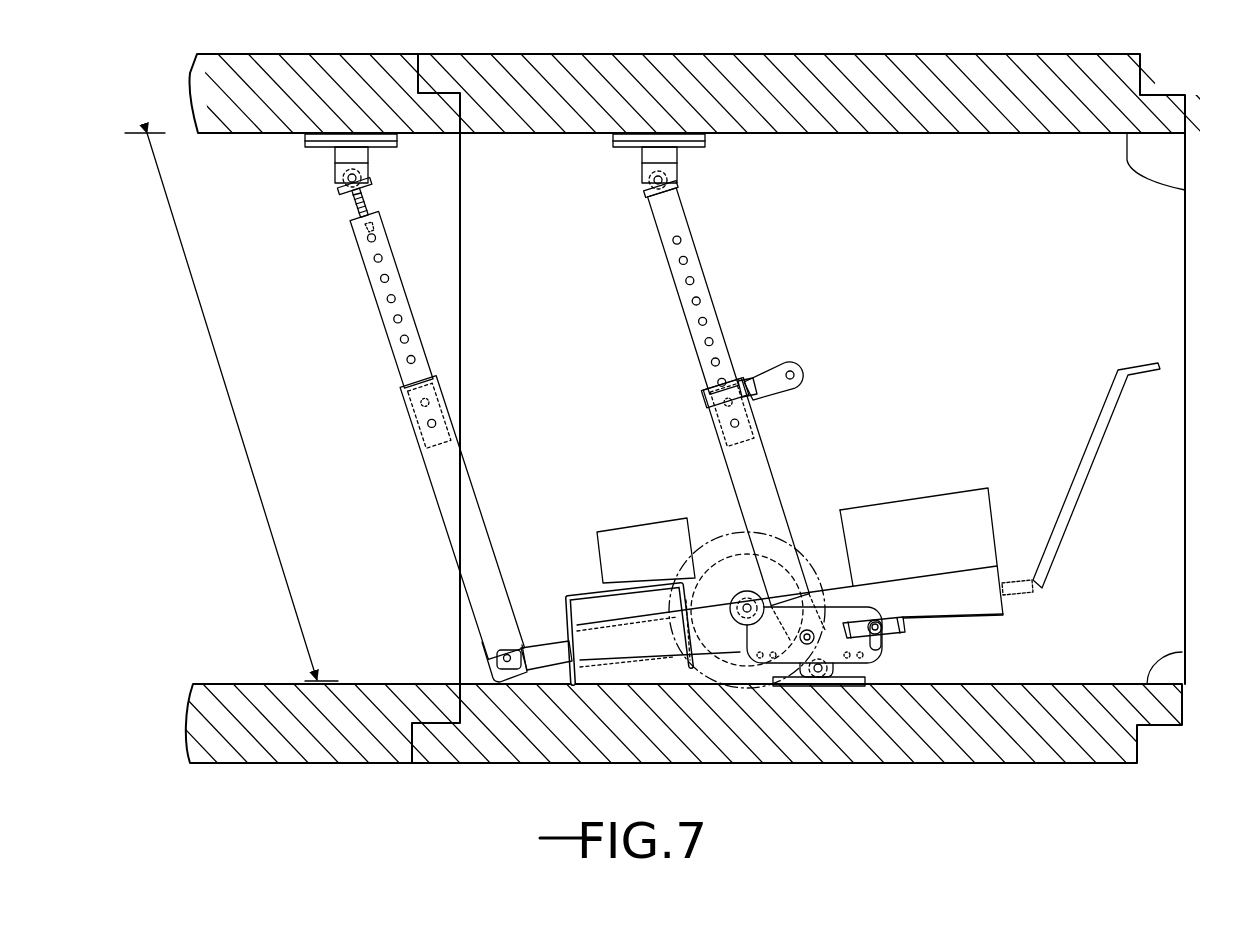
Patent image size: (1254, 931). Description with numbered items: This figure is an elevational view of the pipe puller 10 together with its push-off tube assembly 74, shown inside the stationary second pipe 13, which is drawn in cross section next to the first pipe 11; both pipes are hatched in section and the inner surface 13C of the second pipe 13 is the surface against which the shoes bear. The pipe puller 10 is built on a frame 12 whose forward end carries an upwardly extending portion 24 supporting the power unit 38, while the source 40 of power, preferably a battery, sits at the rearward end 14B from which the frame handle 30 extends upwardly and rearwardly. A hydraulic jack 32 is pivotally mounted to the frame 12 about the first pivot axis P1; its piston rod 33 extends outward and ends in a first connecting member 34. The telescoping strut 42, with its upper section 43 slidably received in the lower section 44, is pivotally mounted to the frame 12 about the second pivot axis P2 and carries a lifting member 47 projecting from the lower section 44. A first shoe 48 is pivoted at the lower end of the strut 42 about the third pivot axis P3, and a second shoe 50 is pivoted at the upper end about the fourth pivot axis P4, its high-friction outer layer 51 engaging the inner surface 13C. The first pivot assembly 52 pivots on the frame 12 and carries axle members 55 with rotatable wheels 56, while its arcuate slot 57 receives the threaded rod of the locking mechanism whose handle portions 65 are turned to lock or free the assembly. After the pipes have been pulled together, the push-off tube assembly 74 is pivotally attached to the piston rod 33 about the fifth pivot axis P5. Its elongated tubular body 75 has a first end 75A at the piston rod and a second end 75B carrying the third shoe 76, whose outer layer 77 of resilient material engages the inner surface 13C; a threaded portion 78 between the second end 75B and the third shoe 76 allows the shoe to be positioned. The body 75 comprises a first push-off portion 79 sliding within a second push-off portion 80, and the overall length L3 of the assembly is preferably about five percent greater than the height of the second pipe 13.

The pipe puller 10 is at (978, 258).
The first pipe 11 is at (308, 34).
The frame 12 is at (965, 580).
The second pipe 13 is at (833, 36).
The inner surface 13C is at (1185, 190).
The rearward end 14B is at (1000, 593).
The upwardly extending portion 24 is at (578, 594).
The frame handle 30 is at (1093, 458).
The hydraulic jack 32 is at (625, 654).
The piston rod 33 is at (553, 659).
The first connecting member 34 is at (524, 650).
The power unit 38 is at (615, 530).
The source of power 40 is at (962, 460).
The strut 42 is at (705, 387).
The upper section 43 is at (680, 207).
The lower section 44 is at (760, 456).
The lifting member 47 is at (800, 362).
The first shoe 48 is at (862, 688).
The second shoe 50 is at (705, 146).
The outer layer 51 is at (614, 137).
The first pivot assembly 52 is at (848, 615).
The axle members 55 is at (735, 595).
The rotatable wheels 56 is at (757, 672).
The arcuate slot 57 is at (884, 650).
The handle portions 65 is at (908, 618).
The push-off tube assembly 74 is at (383, 408).
The elongated tubular body 75 is at (400, 378).
The first end 75A is at (487, 650).
The second end 75B is at (378, 215).
The third shoe 76 is at (398, 142).
The outer layer 77 is at (310, 137).
The threaded portion 78 is at (350, 210).
The first push-off portion 79 is at (392, 285).
The second push-off portion 80 is at (452, 477).
The length L3 is at (180, 240).
The first pivot axis P1 is at (742, 626).
The second pivot axis P2 is at (808, 629).
The third pivot axis P3 is at (820, 674).
The fourth pivot axis P4 is at (652, 186).
The fifth pivot axis P5 is at (503, 652).